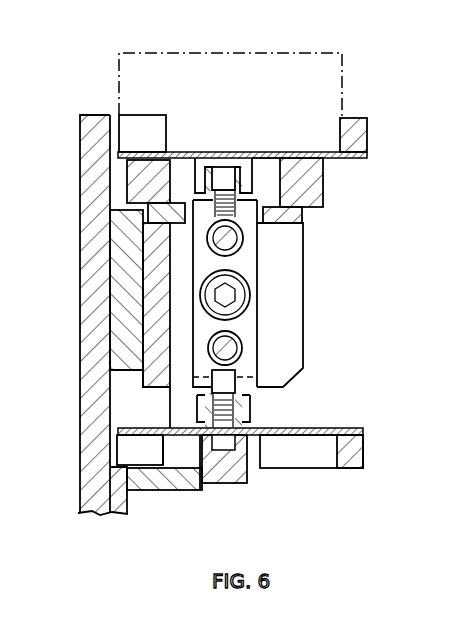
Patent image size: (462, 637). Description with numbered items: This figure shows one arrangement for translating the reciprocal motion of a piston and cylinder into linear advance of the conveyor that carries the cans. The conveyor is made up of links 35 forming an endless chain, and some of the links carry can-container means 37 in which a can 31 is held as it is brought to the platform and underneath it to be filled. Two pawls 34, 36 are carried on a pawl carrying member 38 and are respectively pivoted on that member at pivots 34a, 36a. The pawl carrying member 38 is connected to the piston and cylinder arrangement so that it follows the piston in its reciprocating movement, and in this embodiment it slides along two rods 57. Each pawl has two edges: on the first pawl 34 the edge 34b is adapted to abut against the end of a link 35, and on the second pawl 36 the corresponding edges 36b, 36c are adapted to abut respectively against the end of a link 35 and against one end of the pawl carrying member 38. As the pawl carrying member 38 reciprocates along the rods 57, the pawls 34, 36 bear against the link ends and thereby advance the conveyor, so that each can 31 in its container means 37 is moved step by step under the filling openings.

The can 31 is at (130, 54).
The pawl 34 is at (242, 210).
The pivot of pawl 34a is at (190, 241).
The pawl edge 34b is at (222, 167).
The link 35 is at (228, 167).
The pawl 36 is at (200, 399).
The pivot of pawl 36a is at (250, 375).
The pawl edge 36b is at (228, 412).
The pawl edge 36c is at (235, 380).
The can-container means 37 is at (367, 118).
The pawl carrying member 38 is at (252, 313).
The rod 57 is at (226, 241).